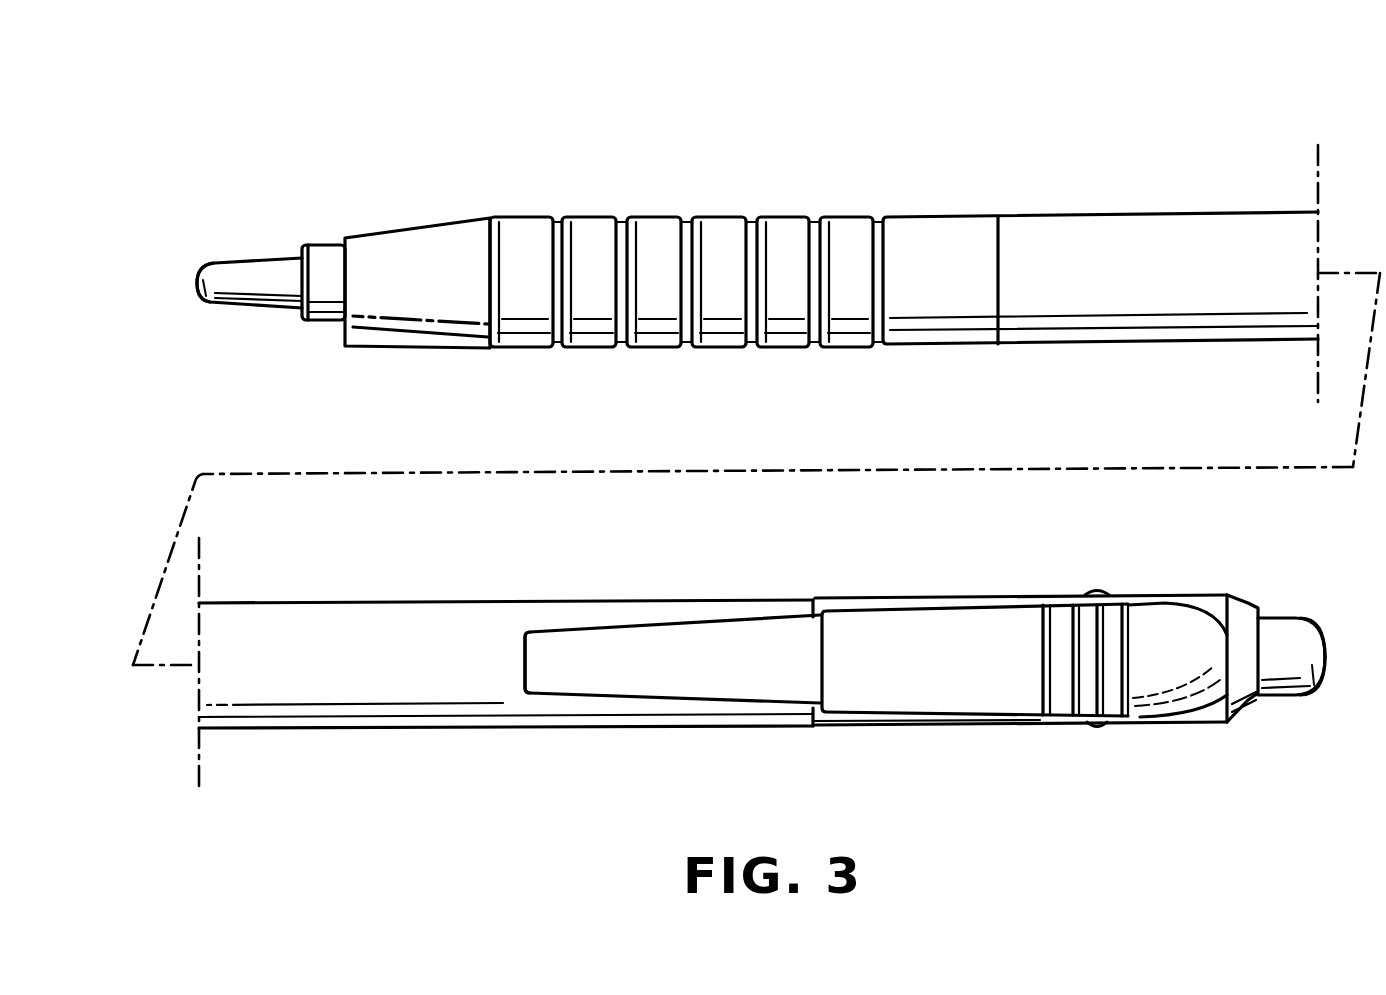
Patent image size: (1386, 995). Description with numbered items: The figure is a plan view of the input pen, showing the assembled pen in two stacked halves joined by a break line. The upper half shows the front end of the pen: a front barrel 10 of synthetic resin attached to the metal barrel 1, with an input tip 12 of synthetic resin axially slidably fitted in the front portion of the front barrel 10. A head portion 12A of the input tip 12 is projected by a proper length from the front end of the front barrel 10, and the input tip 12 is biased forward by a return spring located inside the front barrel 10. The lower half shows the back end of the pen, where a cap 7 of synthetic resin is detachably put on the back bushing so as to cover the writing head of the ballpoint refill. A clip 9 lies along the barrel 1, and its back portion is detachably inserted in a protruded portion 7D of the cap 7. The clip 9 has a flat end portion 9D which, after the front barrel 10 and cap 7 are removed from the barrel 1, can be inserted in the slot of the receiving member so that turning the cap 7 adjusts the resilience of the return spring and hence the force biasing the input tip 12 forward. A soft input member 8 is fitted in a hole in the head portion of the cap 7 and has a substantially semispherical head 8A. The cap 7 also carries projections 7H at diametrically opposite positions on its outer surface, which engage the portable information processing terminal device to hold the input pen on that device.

The barrel 1 is at (1092, 255).
The cap 7 is at (853, 597).
The protruded portion 7D is at (1162, 662).
The projections 7H is at (1097, 728).
The soft input member 8 is at (1285, 645).
The semispherical head 8A is at (1310, 690).
The clip 9 is at (652, 657).
The flat end portion 9D is at (532, 677).
The front barrel 10 is at (583, 238).
The input tip 12 is at (260, 273).
The head portion 12A is at (205, 303).